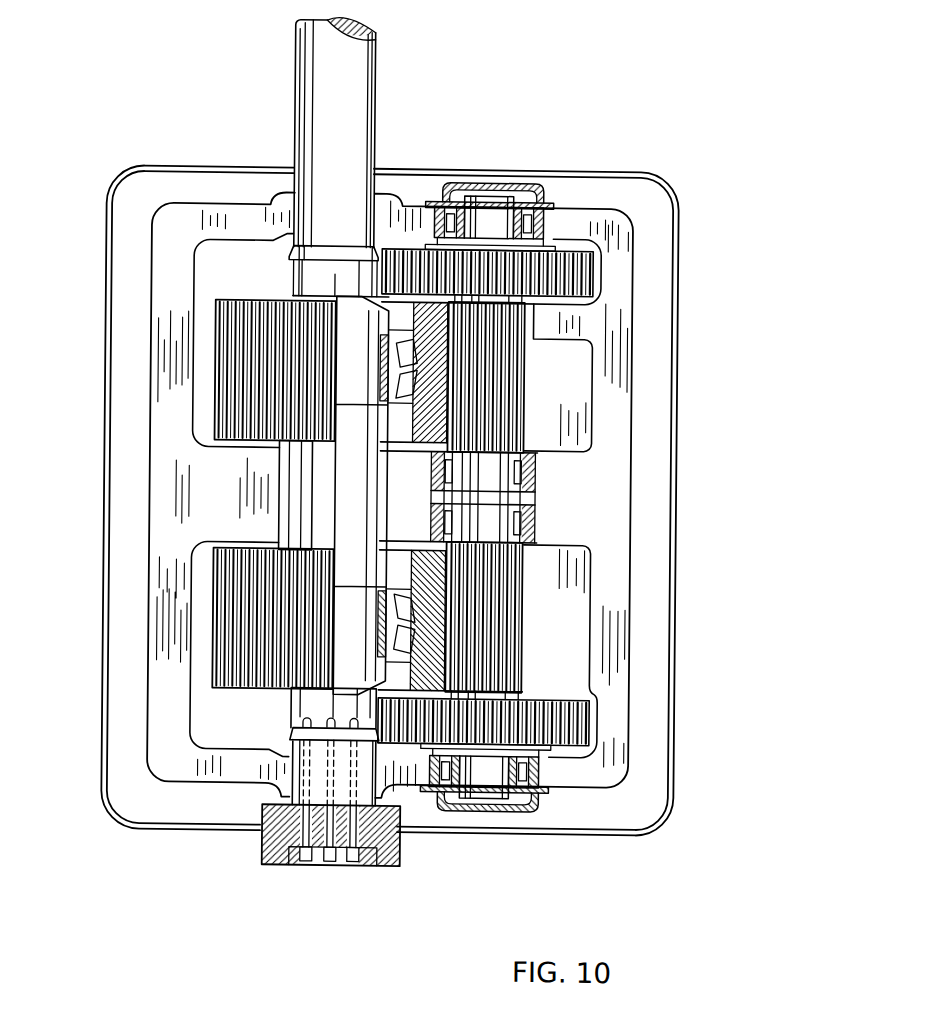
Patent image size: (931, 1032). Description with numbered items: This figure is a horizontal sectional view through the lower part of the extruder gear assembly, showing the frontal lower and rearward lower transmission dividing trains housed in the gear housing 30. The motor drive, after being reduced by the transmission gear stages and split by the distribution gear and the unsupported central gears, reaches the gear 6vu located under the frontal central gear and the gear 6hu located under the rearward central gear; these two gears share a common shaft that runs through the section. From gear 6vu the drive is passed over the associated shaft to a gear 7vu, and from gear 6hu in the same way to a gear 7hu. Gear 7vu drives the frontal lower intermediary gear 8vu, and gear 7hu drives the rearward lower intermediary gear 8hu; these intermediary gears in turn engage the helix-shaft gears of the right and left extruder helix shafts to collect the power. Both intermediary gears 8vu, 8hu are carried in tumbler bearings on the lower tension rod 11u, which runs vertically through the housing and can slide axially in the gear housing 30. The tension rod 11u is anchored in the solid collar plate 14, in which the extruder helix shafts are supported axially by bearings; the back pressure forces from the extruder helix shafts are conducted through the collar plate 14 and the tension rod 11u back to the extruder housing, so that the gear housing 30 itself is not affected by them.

The gear housing 30 is at (98, 622).
The tension rod 11u is at (336, 99).
The frontal lower intermediary gear 8vu is at (272, 345).
The rearward lower intermediary gear 8hu is at (273, 649).
The gear 7vu is at (492, 386).
The gear 7hu is at (491, 621).
The gear 6vu is at (555, 271).
The gear 6hu is at (550, 721).
The collar plate 14 is at (390, 833).